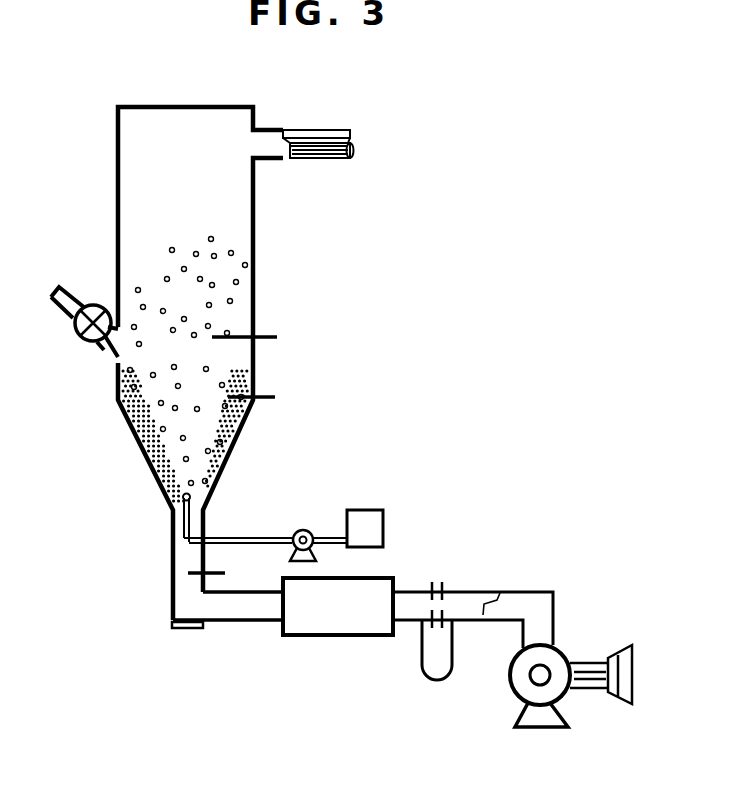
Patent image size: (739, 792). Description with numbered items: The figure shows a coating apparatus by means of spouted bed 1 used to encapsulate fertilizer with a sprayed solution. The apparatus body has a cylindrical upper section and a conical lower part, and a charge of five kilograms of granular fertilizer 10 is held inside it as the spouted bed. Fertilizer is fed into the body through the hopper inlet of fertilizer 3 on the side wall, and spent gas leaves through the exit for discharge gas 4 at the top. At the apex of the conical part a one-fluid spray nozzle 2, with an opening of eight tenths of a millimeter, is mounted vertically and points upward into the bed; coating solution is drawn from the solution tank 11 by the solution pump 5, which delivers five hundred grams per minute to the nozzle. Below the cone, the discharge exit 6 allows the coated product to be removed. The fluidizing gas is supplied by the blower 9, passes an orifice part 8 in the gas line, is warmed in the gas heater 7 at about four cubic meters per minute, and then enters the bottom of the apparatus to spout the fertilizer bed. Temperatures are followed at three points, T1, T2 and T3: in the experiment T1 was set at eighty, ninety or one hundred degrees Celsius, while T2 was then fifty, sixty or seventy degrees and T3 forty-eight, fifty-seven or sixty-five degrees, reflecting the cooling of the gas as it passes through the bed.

The coating apparatus by means of spouted bed 1 is at (118, 207).
The spray nozzle 2 is at (194, 501).
The hopper inlet of fertilizer 3 is at (94, 344).
The exit for discharge gas 4 is at (305, 132).
The solution pump 5 is at (303, 530).
The discharge exit 6 is at (198, 628).
The gas heater 7 is at (333, 627).
The orifice part 8 is at (422, 664).
The blower 9 is at (558, 655).
The granular fertilizer 10 is at (148, 460).
The solution tank 11 is at (383, 526).
The temperature T1 is at (225, 573).
The temperature T2 is at (264, 397).
The temperature T3 is at (277, 337).